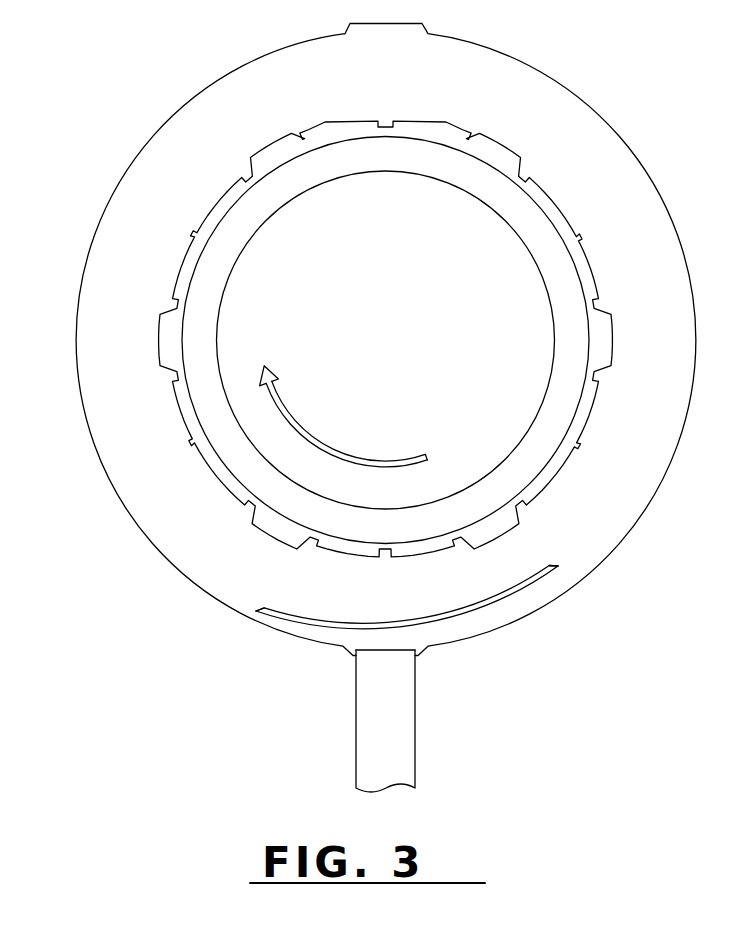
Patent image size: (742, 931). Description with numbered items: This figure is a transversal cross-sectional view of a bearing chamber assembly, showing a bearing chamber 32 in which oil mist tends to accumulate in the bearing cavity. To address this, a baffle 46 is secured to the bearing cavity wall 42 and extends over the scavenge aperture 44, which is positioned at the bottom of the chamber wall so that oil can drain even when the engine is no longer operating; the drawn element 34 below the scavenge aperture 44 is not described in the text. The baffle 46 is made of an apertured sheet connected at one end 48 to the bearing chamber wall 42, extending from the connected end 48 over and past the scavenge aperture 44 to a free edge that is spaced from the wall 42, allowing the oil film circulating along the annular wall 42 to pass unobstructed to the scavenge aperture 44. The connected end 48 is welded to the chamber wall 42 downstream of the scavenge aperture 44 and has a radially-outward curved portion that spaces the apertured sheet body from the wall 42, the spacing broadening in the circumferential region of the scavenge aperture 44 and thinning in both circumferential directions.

The bearing chamber 32 is at (104, 207).
The bearing cavity wall 42 is at (177, 562).
The scavenge aperture 44 is at (420, 657).
The stem 34 is at (416, 746).
The baffle 46 is at (342, 626).
The connected end 48 is at (257, 610).